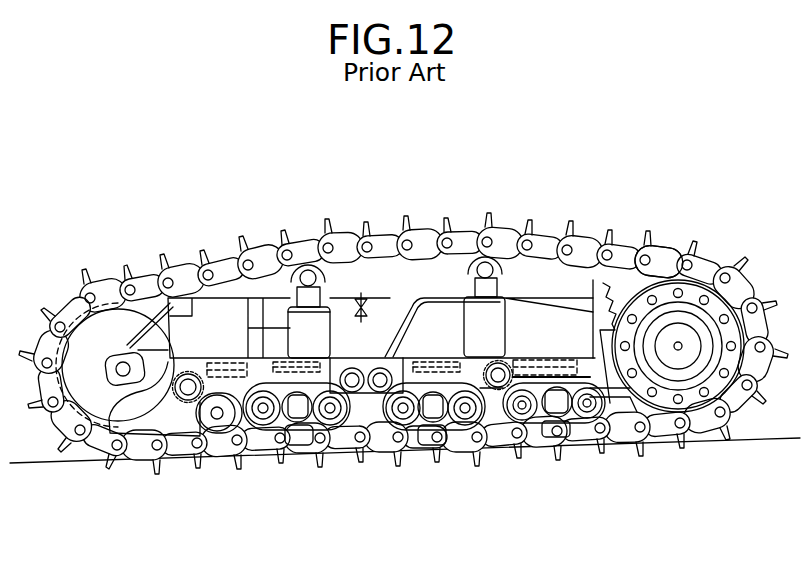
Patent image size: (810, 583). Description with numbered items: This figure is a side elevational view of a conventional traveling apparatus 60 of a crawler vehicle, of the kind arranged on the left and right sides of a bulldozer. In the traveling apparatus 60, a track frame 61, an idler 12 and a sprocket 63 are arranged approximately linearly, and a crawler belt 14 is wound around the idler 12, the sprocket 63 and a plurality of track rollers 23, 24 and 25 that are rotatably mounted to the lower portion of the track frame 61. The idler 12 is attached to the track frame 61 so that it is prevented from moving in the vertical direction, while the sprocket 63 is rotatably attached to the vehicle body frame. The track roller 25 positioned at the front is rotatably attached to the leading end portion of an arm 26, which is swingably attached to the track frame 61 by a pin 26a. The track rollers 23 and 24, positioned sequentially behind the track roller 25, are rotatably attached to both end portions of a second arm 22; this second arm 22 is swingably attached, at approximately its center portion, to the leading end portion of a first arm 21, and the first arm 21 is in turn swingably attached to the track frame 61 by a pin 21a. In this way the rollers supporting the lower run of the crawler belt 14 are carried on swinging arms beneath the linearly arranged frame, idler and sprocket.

The traveling apparatus 60 is at (75, 257).
The crawler belt 14 is at (666, 244).
The sprocket 63 is at (628, 292).
The track frame 61 is at (392, 293).
The idler 12 is at (83, 380).
The pin 26a is at (190, 392).
The track roller 25 is at (218, 422).
The arm 26 is at (254, 427).
The first arm 21 is at (506, 428).
The pin 21a is at (497, 372).
The track roller 23 is at (529, 421).
The track roller 24 is at (584, 422).
The second arm 22 is at (585, 418).